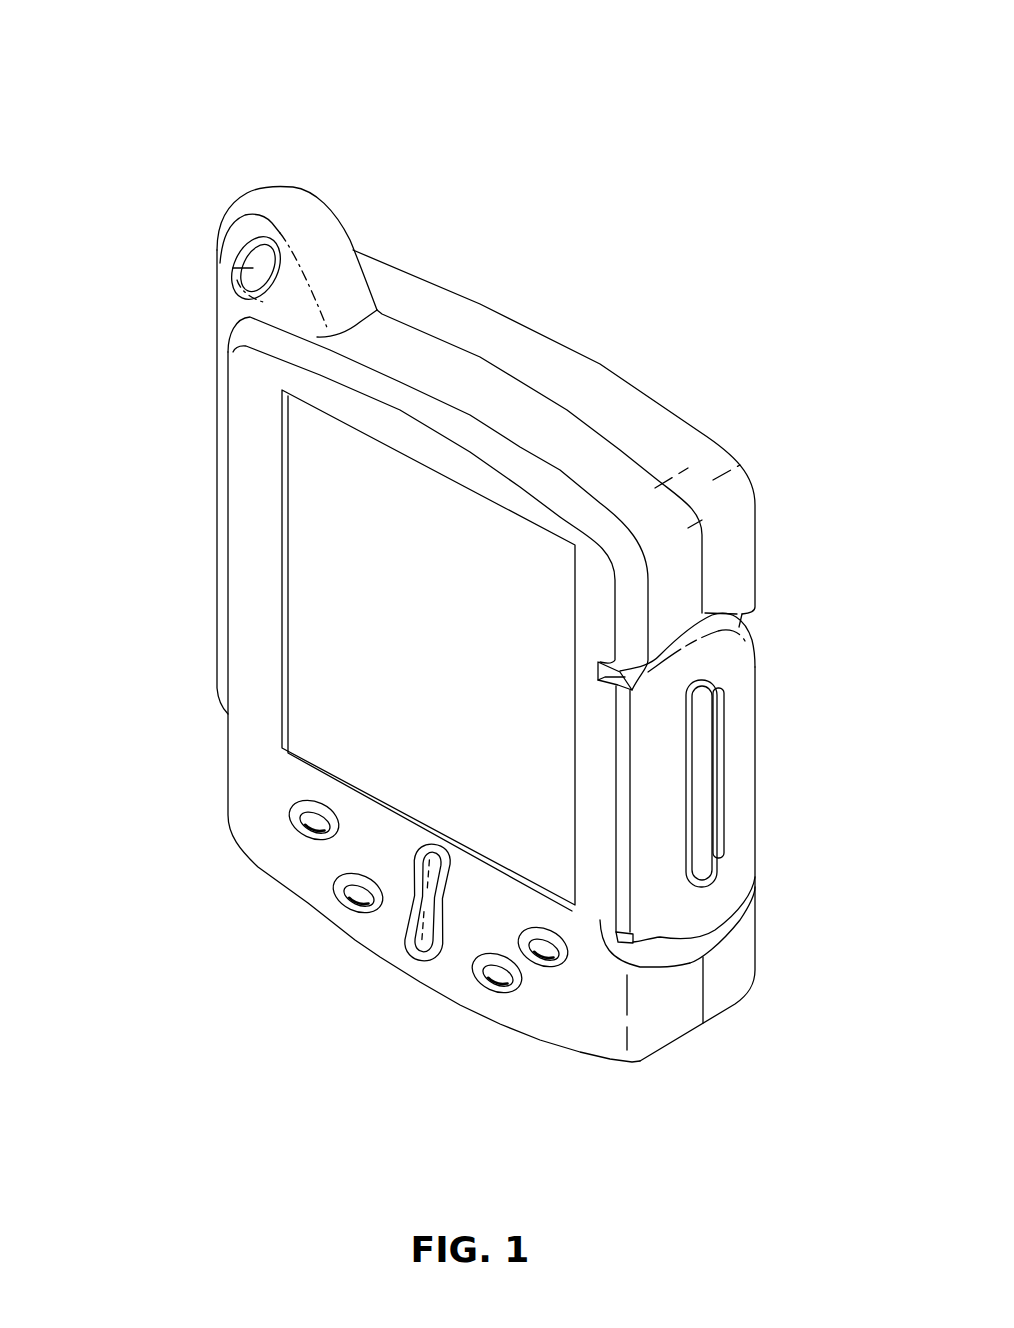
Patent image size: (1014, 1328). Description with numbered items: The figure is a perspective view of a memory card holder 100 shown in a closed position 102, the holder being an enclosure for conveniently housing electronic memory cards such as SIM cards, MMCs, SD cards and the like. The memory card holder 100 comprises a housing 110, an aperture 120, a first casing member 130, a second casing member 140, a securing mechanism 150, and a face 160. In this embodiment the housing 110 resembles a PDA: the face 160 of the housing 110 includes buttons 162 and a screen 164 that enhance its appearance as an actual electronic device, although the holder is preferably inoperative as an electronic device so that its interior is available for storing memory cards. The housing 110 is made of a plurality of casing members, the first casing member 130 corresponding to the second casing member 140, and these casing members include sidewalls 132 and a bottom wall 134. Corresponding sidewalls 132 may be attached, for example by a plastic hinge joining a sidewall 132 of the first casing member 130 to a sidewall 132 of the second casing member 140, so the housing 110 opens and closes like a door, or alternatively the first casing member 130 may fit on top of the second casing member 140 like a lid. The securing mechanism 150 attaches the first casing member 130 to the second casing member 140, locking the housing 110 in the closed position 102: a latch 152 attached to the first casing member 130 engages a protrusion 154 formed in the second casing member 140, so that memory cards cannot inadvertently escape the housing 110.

The memory card holder 100 is at (150, 84).
The closed position 102 is at (827, 784).
The housing 110 is at (792, 561).
The aperture 120 is at (243, 268).
The first casing member 130 is at (660, 1037).
The sidewalls 132 is at (470, 383).
The bottom wall 134 is at (252, 560).
The second casing member 140 is at (737, 993).
The securing mechanism 150 is at (743, 777).
The latch 152 is at (745, 822).
The protrusion 154 is at (712, 731).
The face 160 is at (184, 741).
The buttons 162 is at (363, 915).
The screen 164 is at (447, 689).